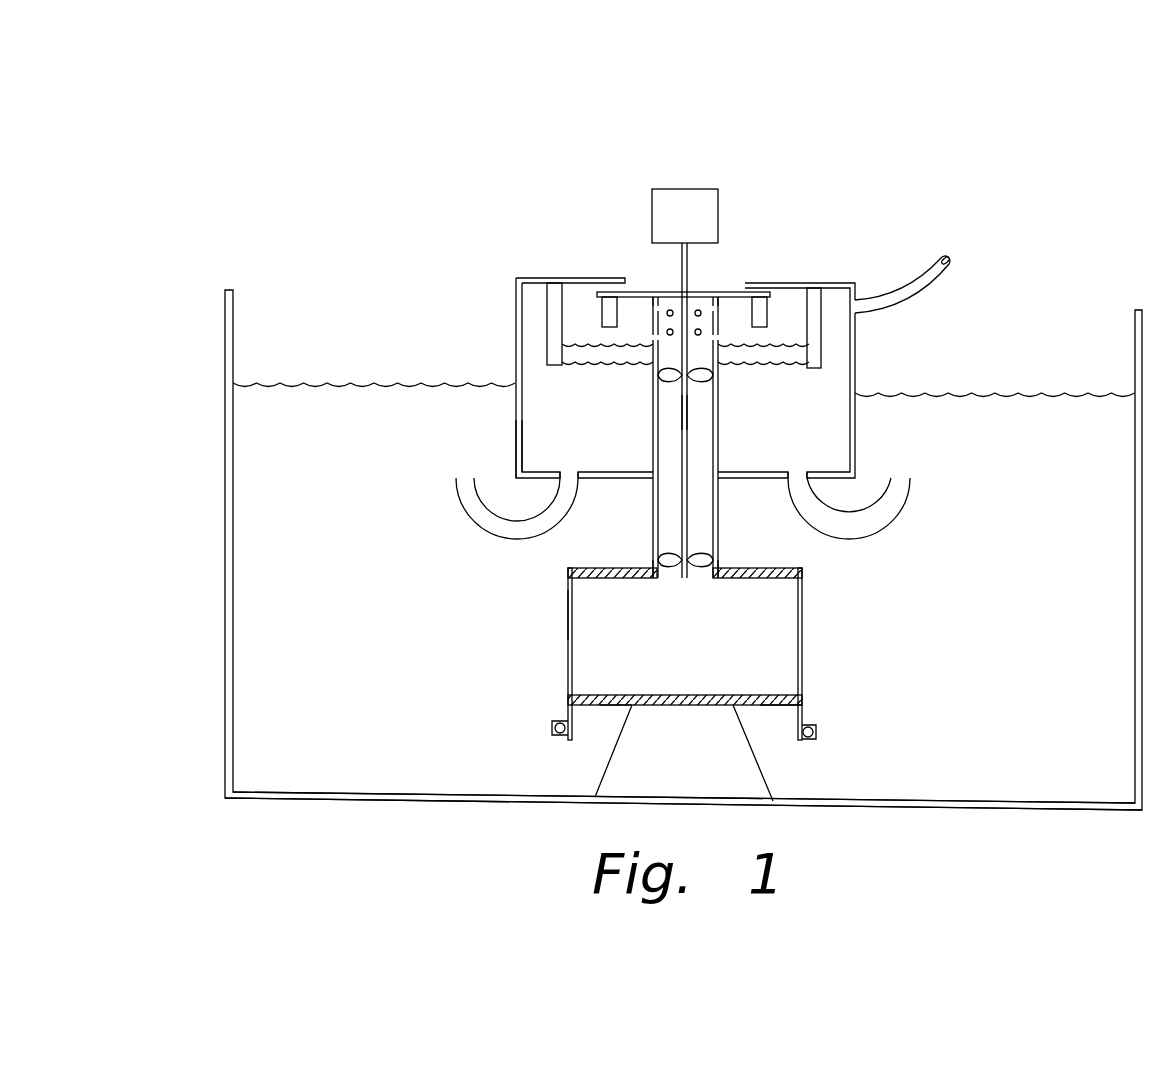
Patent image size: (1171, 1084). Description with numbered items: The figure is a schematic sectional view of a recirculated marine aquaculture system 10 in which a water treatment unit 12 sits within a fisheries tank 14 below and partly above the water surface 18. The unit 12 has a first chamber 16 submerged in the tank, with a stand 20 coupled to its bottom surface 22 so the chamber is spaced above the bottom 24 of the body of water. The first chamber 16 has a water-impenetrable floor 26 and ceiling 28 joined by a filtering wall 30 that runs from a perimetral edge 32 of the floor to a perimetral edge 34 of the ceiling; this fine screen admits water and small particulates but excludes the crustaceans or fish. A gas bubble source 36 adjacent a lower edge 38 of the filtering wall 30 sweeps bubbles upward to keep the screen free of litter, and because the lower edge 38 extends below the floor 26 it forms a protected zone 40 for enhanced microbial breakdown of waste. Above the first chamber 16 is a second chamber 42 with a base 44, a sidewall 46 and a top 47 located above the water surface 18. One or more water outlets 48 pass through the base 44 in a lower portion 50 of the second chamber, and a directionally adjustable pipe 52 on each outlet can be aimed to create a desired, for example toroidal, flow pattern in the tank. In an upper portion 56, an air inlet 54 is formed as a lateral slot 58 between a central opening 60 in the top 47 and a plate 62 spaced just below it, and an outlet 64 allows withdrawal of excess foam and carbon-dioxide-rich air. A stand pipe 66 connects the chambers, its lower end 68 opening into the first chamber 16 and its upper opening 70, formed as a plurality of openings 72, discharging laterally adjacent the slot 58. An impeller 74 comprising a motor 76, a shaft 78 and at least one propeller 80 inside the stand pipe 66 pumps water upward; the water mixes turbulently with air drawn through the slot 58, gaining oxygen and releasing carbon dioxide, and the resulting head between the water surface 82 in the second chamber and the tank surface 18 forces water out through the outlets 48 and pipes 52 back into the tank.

The recirculated marine aquaculture system 10 is at (258, 184).
The water treatment unit 12 is at (814, 264).
The fisheries tank 14 is at (233, 337).
The first chamber 16 is at (797, 612).
The water surface 18 is at (373, 385).
The stand 20 is at (620, 776).
The bottom surface 22 is at (608, 705).
The bottom 24 is at (400, 792).
The floor 26 is at (686, 695).
The ceiling 28 is at (592, 568).
The filtering wall 30 is at (568, 612).
The perimetral edge 32 is at (802, 705).
The perimetral edge 34 is at (803, 572).
The gas bubble source 36 is at (815, 732).
The lower edge 38 is at (556, 728).
The protected zone 40 is at (781, 746).
The second chamber 42 is at (527, 321).
The base 44 is at (738, 480).
The sidewall 46 is at (857, 380).
The top 47 is at (830, 283).
The water outlet 48 is at (569, 478).
The lower portion 50 is at (521, 443).
The directionally adjustable pipe 52 is at (495, 508).
The air inlet 54 is at (741, 280).
The upper portion 56 is at (521, 293).
The lateral slot 58 is at (607, 292).
The central opening 60 is at (630, 292).
The plate 62 is at (694, 292).
The outlet 64 is at (912, 300).
The stand pipe 66 is at (719, 430).
The lower end 68 is at (665, 580).
The upper opening 70 is at (720, 304).
The openings 72 is at (653, 330).
The impeller 74 is at (651, 169).
The motor 76 is at (700, 200).
The shaft 78 is at (682, 410).
The propeller 80 is at (718, 375).
The water surface 82 is at (838, 368).